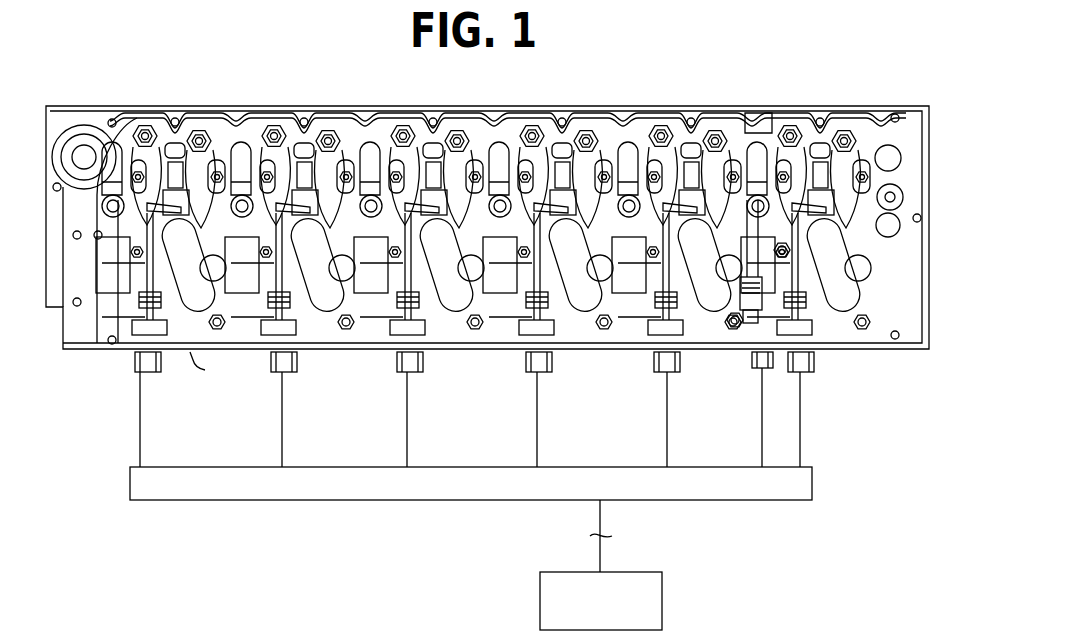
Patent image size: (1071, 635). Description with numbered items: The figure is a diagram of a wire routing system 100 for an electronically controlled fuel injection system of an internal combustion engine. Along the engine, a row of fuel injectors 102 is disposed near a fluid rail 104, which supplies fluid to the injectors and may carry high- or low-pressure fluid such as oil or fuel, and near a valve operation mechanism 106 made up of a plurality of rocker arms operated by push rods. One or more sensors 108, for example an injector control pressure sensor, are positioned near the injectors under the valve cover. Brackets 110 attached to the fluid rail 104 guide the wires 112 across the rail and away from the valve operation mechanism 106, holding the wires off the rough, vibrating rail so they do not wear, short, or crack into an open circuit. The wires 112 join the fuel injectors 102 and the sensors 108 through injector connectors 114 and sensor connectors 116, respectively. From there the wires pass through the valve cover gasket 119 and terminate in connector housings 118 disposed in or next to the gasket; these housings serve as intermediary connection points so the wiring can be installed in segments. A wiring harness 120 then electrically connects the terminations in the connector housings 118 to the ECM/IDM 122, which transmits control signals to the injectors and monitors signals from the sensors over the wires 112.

The wire routing system 100 is at (108, 566).
The fuel injector 102 is at (205, 200).
The fluid rail 104 is at (375, 255).
The valve operation mechanism 106 is at (177, 123).
The sensor 108 is at (772, 200).
The bracket 110 is at (256, 350).
The wire 112 is at (127, 124).
The injector connector 114 is at (857, 376).
The sensor connector 116 is at (758, 250).
The connector housing 118 is at (133, 366).
The valve cover gasket 119 is at (354, 348).
The wiring harness 120 is at (345, 500).
The ECM/IDM 122 is at (662, 604).